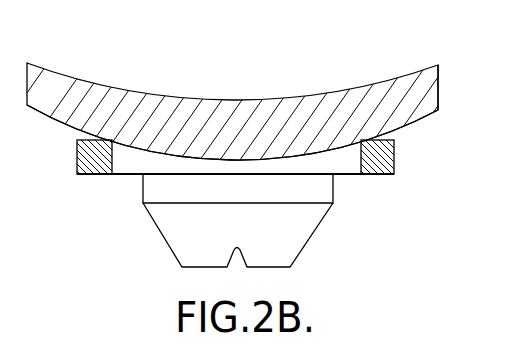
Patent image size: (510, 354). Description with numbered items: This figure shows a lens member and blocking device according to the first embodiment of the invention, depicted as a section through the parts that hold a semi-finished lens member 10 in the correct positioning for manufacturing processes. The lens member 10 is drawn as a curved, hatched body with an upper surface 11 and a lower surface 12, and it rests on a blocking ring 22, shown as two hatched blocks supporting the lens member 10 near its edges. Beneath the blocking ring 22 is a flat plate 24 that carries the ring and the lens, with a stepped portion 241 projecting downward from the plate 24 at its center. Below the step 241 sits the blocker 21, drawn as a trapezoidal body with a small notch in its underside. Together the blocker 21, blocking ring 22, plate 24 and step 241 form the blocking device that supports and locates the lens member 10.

The lens member 10 is at (438, 80).
The lens bottom surface 11 is at (402, 125).
The lens top surface 12 is at (357, 88).
The blocker 21 is at (297, 217).
The blocking ring 22 is at (392, 163).
The base plate 24 is at (142, 155).
The step portion 241 is at (336, 176).